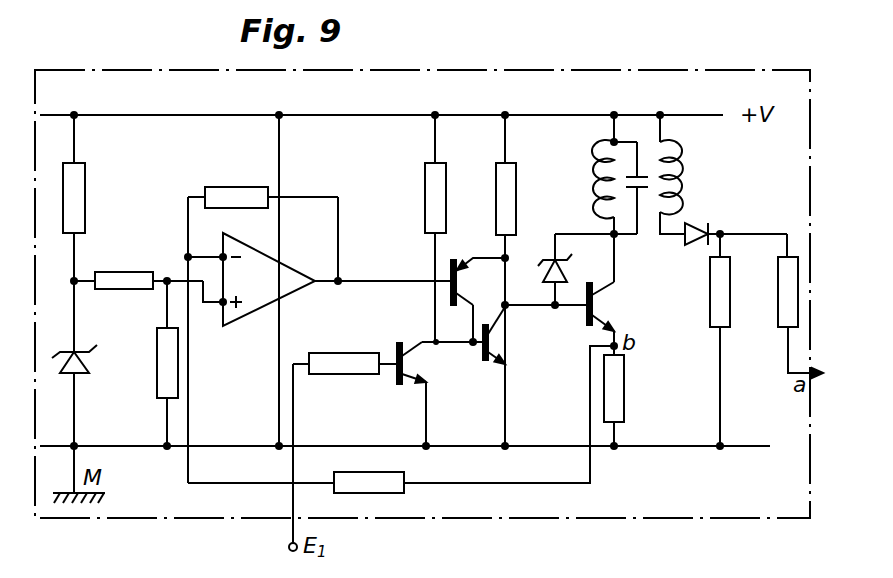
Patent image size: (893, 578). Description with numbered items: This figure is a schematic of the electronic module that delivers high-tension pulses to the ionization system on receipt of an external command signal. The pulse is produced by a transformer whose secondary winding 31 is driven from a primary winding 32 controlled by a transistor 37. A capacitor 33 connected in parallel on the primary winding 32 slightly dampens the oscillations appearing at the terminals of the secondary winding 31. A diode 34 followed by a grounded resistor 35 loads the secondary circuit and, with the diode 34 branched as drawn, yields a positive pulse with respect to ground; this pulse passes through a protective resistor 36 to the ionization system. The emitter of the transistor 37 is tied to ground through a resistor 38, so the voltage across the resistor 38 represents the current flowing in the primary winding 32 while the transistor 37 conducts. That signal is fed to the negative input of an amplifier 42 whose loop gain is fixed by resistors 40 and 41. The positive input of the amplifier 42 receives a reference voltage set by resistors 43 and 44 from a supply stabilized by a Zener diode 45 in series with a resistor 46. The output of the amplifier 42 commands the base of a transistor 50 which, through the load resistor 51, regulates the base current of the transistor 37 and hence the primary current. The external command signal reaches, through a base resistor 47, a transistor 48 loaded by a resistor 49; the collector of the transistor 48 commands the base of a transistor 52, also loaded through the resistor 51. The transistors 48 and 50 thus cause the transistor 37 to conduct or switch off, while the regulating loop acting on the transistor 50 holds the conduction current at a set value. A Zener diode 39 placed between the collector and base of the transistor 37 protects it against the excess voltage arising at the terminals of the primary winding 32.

The secondary winding 31 is at (683, 190).
The primary winding 32 is at (592, 173).
The capacitor 33 is at (646, 190).
The diode 34 is at (713, 224).
The grounded resistor 35 is at (731, 300).
The protective resistor 36 is at (776, 302).
The transistor 37 is at (601, 311).
The emitter resistor 38 is at (618, 402).
The Zener diode 39 is at (565, 268).
The resistor 40 is at (399, 492).
The resistor 41 is at (241, 190).
The amplifier 42 is at (292, 275).
The resistor 43 is at (165, 387).
The resistor 44 is at (126, 282).
The Zener diode 45 is at (86, 367).
The resistor 46 is at (78, 207).
The base resistor 47 is at (362, 342).
The transistor 48 is at (418, 362).
The load resistor 49 is at (445, 197).
The transistor 50 is at (450, 272).
The load resistor 51 is at (512, 197).
The transistor 52 is at (494, 344).